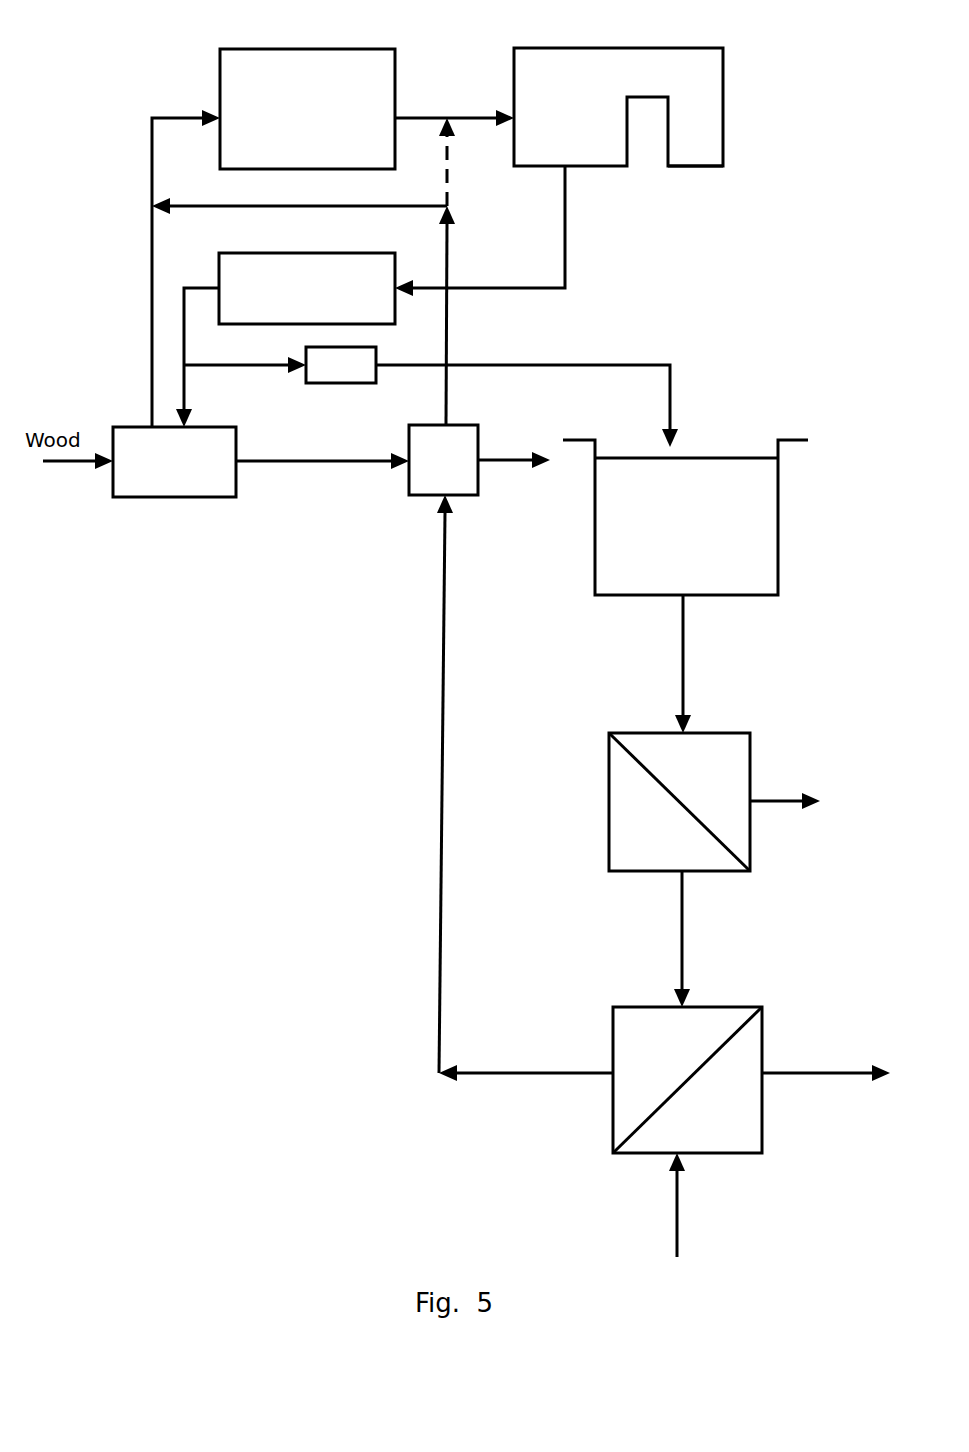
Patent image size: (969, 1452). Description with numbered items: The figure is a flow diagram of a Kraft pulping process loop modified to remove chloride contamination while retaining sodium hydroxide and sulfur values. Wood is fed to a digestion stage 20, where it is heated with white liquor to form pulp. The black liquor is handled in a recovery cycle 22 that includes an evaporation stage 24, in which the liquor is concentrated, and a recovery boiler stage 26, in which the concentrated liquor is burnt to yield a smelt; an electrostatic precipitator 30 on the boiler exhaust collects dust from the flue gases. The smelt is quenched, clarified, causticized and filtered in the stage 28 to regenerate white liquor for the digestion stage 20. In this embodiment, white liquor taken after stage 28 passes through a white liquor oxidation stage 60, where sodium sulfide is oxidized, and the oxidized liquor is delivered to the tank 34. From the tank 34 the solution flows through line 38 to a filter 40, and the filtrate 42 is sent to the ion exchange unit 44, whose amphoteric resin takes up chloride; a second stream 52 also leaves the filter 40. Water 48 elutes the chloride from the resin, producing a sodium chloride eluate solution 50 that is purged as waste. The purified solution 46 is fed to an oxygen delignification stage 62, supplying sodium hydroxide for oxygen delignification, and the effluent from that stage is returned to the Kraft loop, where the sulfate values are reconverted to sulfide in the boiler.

The digestion stage 20 is at (150, 483).
The recovery cycle 22 is at (152, 268).
The evaporation stage 24 is at (365, 75).
The recovery boiler stage 26 is at (533, 167).
The green liquor clarification and causticizing stage 28 is at (353, 278).
The electrostatic precipitator 30 is at (700, 158).
The dissolving tank 34 is at (778, 565).
The line 38 is at (686, 683).
The filter 40 is at (605, 762).
The filtrate 42 is at (685, 915).
The ion exchange unit 44 is at (755, 1050).
The purified solution stream 46 is at (548, 1075).
The water 48 is at (678, 1190).
The sodium chloride eluate solution 50 is at (835, 1078).
The concentrate outlet line 52 is at (777, 800).
The white liquor oxidation stage 60 is at (348, 385).
The oxygen delignification stage 62 is at (457, 470).